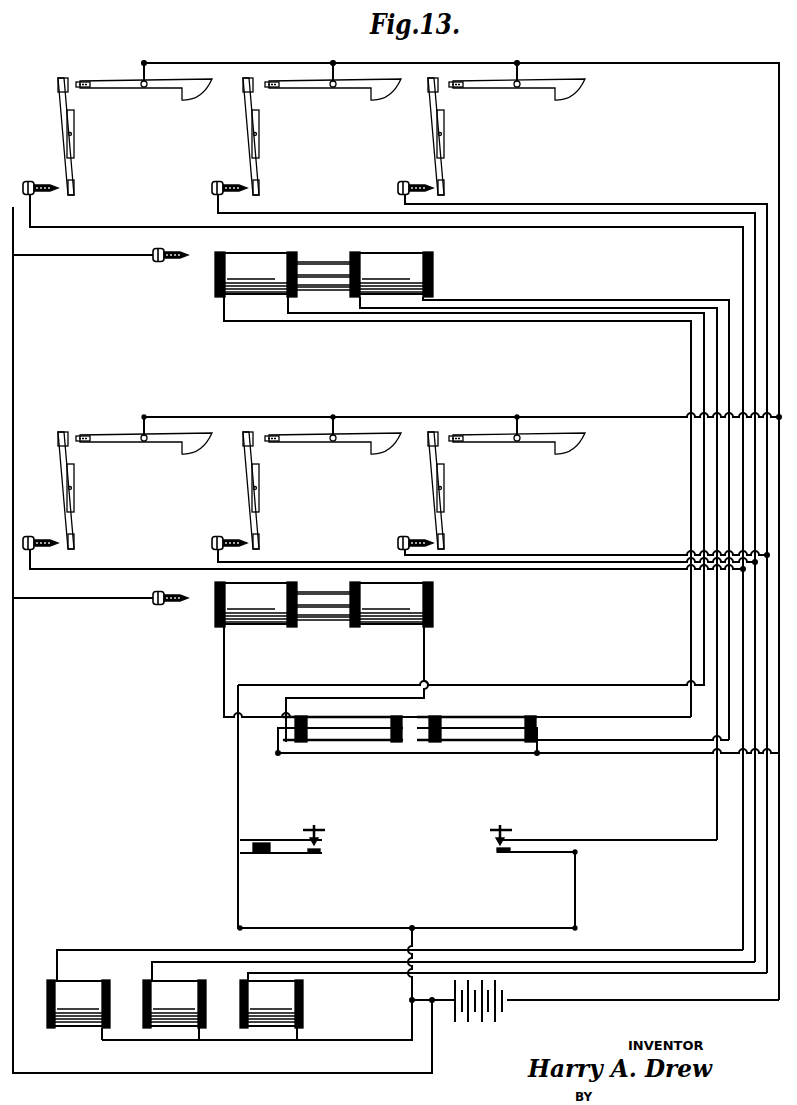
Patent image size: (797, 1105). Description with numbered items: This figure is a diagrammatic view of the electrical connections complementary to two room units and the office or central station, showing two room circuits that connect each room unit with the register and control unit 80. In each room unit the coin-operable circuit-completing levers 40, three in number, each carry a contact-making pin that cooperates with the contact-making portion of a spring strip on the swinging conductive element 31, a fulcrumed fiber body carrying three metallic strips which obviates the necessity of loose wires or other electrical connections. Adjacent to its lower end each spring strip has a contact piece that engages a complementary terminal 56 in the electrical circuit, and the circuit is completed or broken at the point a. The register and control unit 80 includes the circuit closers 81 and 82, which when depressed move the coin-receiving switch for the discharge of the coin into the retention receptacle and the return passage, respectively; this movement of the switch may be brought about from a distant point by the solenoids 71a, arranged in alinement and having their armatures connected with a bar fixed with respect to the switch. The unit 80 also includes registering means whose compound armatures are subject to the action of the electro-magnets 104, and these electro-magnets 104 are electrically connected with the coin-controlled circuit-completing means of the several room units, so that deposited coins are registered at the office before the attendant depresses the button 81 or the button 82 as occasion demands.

The coin-operable circuit-completing lever 40 is at (177, 92).
The swinging conductive element 31 is at (62, 134).
The terminal 56 is at (44, 199).
The circuit point a is at (190, 264).
The solenoid 71a is at (265, 262).
The register and control unit 80 is at (387, 807).
The circuit closer 81 is at (316, 830).
The circuit closer 82 is at (497, 829).
The electro-magnet 104 is at (275, 997).